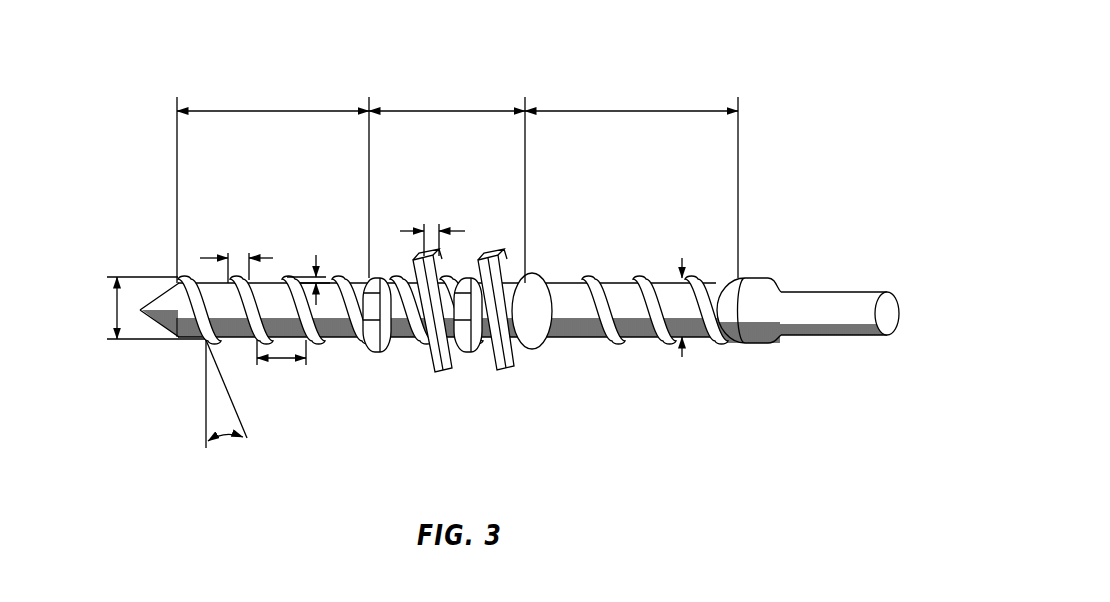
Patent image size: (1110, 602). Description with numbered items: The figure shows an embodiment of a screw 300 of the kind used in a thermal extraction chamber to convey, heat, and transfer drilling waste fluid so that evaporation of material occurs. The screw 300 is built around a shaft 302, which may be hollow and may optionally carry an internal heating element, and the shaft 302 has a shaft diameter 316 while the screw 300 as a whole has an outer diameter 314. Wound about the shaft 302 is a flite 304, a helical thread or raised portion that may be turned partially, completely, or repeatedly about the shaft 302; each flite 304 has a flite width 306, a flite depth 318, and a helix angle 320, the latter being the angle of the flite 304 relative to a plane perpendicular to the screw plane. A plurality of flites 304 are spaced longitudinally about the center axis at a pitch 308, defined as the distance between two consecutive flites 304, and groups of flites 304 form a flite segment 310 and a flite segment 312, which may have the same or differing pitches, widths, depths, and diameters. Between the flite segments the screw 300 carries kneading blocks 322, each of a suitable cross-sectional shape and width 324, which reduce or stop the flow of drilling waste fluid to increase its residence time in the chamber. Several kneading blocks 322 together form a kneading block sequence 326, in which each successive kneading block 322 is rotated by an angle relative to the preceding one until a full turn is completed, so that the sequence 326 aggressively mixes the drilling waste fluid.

The screw 300 is at (668, 45).
The shaft 302 is at (570, 293).
The flite 304 is at (643, 282).
The flite width 306 is at (265, 257).
The pitch 308 is at (283, 362).
The flite segment 310 is at (630, 111).
The flite segment 312 is at (277, 111).
The outer diameter 314 is at (115, 310).
The shaft diameter 316 is at (684, 348).
The flite depth 318 is at (317, 256).
The helix angle 320 is at (225, 443).
The kneading block 322 is at (408, 365).
The width 324 is at (457, 230).
The kneading block sequence 326 is at (448, 111).